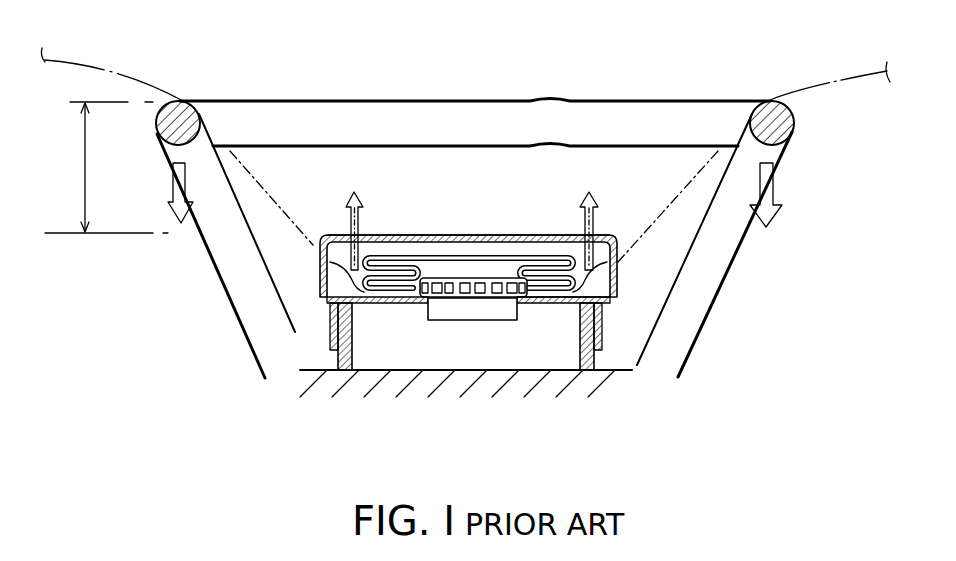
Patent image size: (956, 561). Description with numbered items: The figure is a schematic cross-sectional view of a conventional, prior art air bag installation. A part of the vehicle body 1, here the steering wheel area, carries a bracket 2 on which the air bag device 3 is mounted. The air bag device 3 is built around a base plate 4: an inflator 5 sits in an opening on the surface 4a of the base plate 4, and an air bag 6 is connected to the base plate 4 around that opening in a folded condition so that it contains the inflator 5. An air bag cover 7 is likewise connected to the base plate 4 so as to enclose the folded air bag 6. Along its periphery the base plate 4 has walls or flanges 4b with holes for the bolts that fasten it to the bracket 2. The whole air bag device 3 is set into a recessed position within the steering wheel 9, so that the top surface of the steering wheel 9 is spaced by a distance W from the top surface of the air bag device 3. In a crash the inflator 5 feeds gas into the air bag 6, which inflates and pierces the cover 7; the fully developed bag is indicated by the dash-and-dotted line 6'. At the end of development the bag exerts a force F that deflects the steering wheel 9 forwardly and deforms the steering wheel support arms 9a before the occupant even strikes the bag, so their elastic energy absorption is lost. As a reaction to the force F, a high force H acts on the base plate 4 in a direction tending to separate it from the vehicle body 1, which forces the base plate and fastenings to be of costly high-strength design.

The vehicle body 1 is at (615, 454).
The bracket 2 is at (354, 367).
The air bag device 3 is at (545, 237).
The base plate 4 is at (413, 304).
The surface of the base plate 4a is at (548, 304).
The peripheral walls or flanges 4b is at (336, 344).
The inflator 5 is at (467, 322).
The air bag 6 is at (469, 225).
The inflated air bag 6' is at (491, 138).
The air bag cover 7 is at (507, 237).
The steering wheel 9 is at (386, 117).
The steering wheel support arms 9a is at (230, 305).
The force H is at (347, 190).
The force F is at (171, 190).
The distance W is at (100, 101).